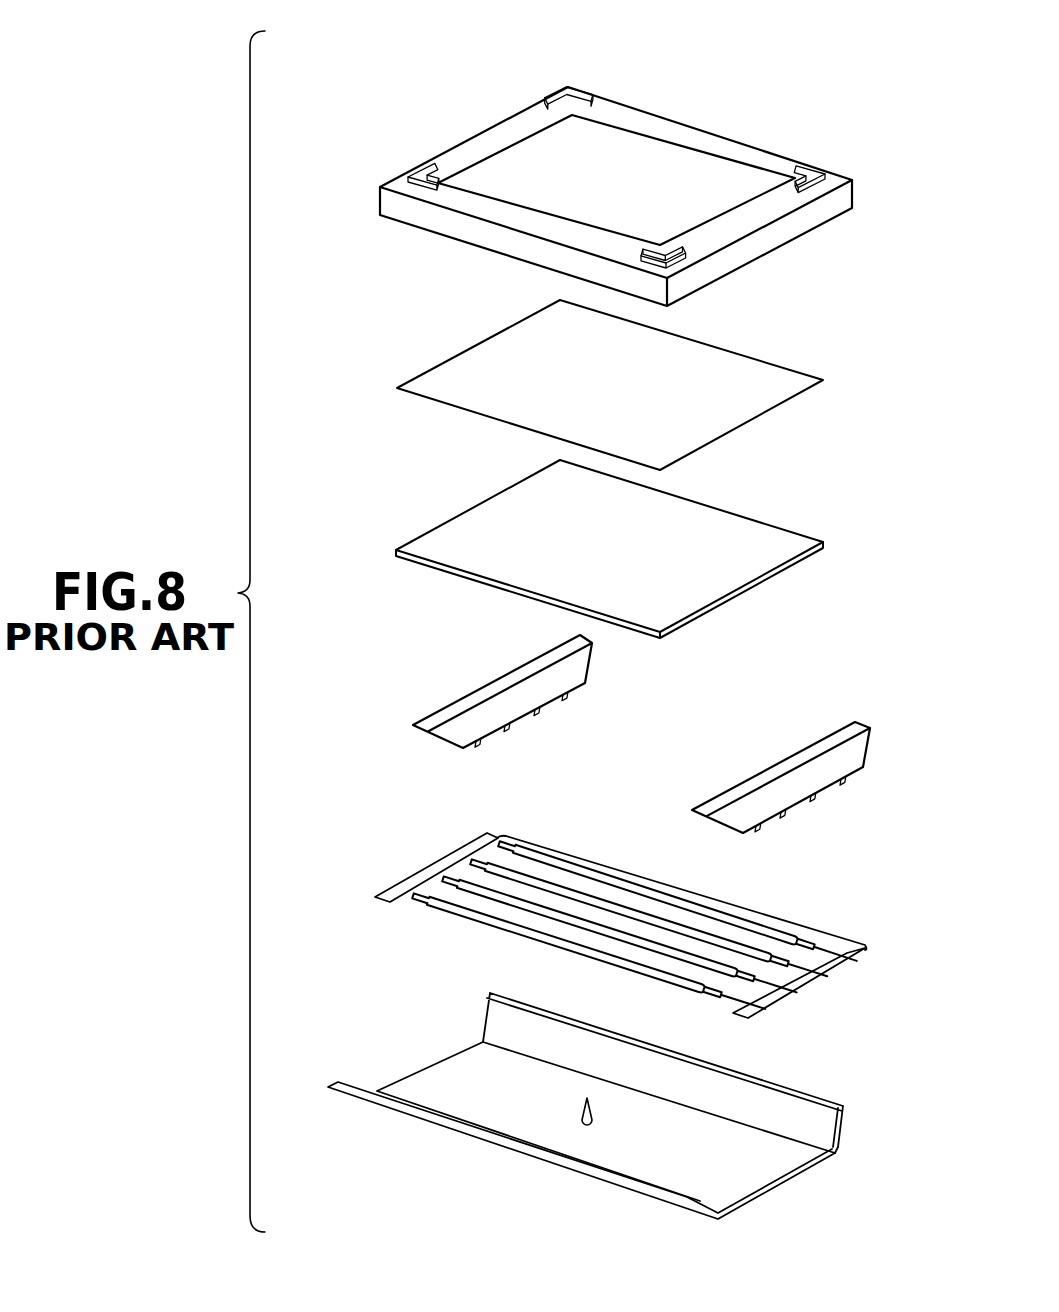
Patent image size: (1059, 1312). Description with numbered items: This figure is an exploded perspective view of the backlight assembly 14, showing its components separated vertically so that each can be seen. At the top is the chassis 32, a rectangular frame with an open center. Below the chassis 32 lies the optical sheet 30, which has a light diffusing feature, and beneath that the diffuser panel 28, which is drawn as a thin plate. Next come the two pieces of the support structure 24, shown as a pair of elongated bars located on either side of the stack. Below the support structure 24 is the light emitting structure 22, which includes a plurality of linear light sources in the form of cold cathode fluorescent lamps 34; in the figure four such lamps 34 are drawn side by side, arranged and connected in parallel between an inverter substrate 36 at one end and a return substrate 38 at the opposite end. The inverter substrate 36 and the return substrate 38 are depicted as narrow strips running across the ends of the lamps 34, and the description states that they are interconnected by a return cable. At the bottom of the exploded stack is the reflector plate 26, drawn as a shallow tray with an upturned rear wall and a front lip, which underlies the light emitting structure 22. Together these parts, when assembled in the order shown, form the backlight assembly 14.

The backlight assembly 14 is at (616, 157).
The chassis 32 is at (748, 143).
The optical sheet 30 is at (653, 405).
The diffuser panel 28 is at (653, 565).
The support structure 24 is at (807, 750).
The light emitting structure 22 is at (628, 910).
The cold cathode fluorescent lamps 34 is at (572, 945).
The return substrate 38 is at (437, 870).
The inverter substrate 36 is at (818, 975).
The reflector plate 26 is at (775, 1188).